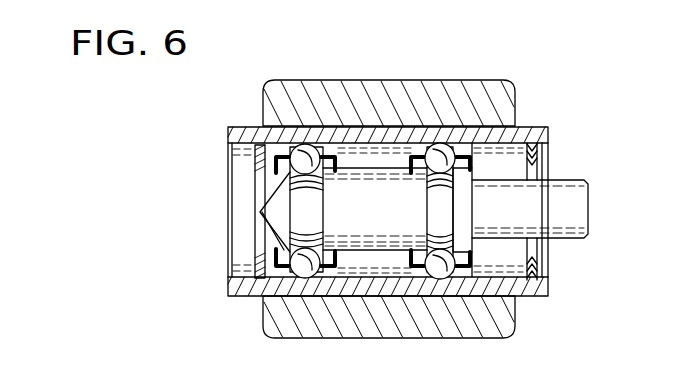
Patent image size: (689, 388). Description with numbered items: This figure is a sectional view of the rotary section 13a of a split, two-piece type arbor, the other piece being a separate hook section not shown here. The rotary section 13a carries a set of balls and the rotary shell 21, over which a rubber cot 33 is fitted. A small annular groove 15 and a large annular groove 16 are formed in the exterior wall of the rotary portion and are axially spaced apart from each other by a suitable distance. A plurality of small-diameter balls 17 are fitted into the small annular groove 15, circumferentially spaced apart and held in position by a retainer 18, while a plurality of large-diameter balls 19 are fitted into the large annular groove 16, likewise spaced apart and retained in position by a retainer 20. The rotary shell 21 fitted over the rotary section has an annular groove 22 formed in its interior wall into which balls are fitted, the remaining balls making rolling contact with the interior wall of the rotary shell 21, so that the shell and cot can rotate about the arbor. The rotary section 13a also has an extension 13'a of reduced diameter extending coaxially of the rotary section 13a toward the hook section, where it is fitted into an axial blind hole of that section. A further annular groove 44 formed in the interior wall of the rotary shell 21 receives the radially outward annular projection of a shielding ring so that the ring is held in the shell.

The rubber cot 33 is at (346, 93).
The rotary shell 21 is at (363, 287).
The retainer 20 is at (263, 281).
The rotary section 13a is at (390, 180).
The extension 13'a is at (566, 206).
The large annular groove 16 is at (312, 203).
The small annular groove 15 is at (437, 213).
The large-diameter balls 19 is at (305, 158).
The small-diameter balls 17 is at (444, 150).
The annular groove 22 is at (437, 147).
The retainer 18 is at (416, 268).
The annular groove 44 is at (540, 152).